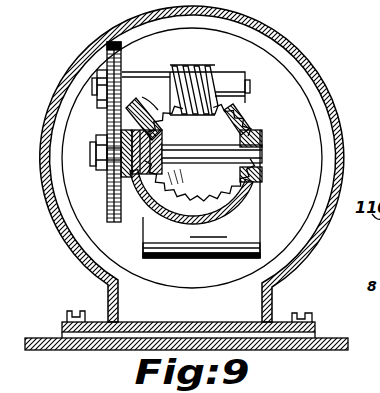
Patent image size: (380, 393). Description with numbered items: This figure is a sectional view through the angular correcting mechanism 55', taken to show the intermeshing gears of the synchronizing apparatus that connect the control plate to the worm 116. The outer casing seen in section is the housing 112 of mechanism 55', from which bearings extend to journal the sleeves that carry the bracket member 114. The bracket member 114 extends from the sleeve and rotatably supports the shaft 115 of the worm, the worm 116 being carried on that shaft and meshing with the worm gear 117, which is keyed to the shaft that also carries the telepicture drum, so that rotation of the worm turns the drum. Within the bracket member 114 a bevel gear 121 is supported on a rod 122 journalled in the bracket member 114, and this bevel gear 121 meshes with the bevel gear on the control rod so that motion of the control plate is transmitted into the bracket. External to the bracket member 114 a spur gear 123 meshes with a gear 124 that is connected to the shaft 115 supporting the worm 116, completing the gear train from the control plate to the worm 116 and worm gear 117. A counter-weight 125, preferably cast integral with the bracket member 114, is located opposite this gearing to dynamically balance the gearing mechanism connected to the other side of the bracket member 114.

The angular correcting mechanism 55' is at (207, 164).
The housing 112 is at (333, 168).
The gear 124 is at (123, 52).
The spur gear 123 is at (112, 212).
The shaft 115 is at (251, 91).
The worm 116 is at (199, 66).
The rod 122 is at (263, 157).
The bracket member 114 is at (250, 132).
The worm gear 117 is at (210, 180).
The bevel gear 121 is at (148, 172).
The counter-weight 125 is at (194, 259).